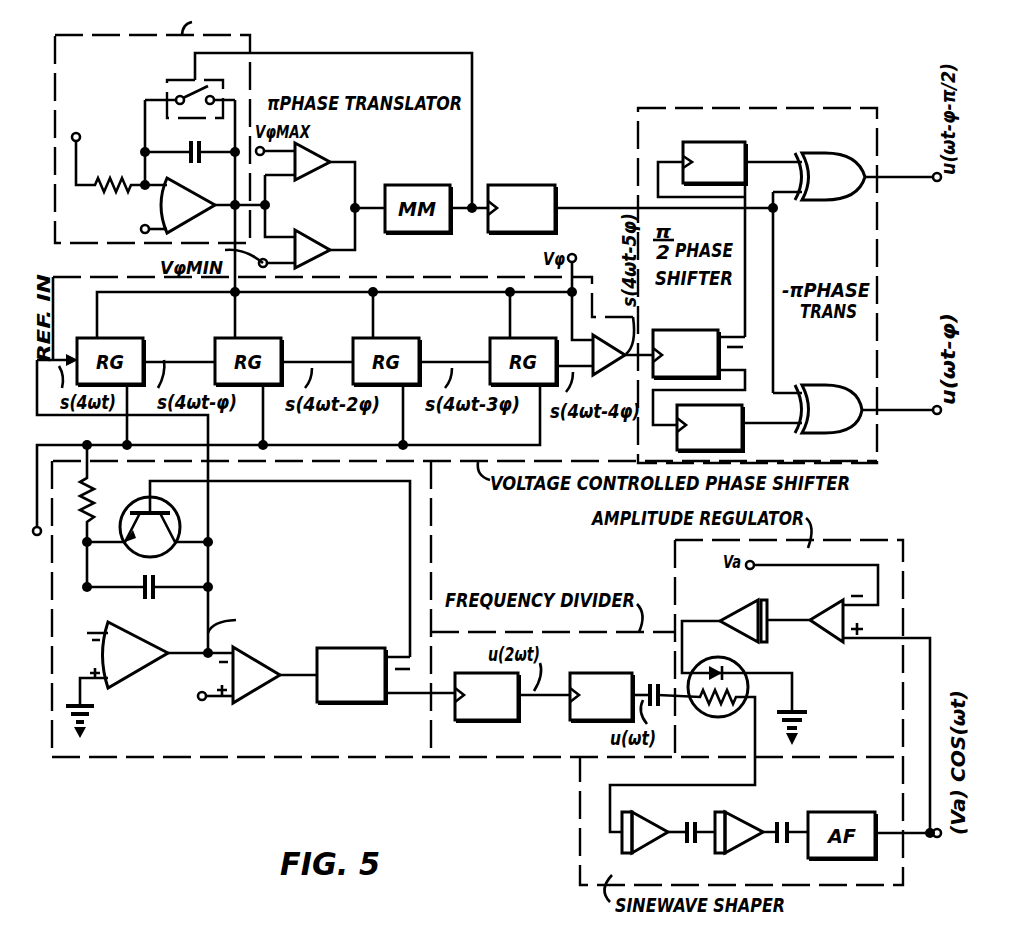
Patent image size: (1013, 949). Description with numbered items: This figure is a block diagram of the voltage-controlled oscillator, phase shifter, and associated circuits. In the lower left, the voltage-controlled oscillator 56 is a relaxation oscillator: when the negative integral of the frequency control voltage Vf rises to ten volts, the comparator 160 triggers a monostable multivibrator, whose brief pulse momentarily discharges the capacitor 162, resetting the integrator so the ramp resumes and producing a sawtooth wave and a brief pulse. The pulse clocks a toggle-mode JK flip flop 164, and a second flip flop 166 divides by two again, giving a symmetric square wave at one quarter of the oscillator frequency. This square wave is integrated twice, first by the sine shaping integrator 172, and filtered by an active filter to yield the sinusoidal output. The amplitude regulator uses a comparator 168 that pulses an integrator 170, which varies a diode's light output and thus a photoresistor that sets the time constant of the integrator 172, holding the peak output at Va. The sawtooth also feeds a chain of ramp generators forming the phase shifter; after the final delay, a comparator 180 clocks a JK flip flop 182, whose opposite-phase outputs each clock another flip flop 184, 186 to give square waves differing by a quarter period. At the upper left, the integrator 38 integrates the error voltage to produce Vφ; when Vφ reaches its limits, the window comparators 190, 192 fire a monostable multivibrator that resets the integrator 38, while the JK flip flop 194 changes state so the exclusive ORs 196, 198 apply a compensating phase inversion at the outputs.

The integrator 38 is at (106, 36).
The voltage-controlled oscillator 56 is at (240, 616).
The comparator 160 is at (264, 660).
The capacitor 162 is at (158, 596).
The JK flip flop 164 is at (457, 673).
The second flip flop 166 is at (586, 673).
The comparator 168 is at (834, 605).
The integrator 170 is at (730, 610).
The first sine shaping integrator 172 is at (650, 799).
The comparator 180 is at (609, 375).
The JK flip flop 182 is at (689, 330).
The JK flip flop 184 is at (742, 436).
The JK flip flop 186 is at (692, 142).
The window comparator 190 is at (327, 154).
The window comparator 192 is at (317, 233).
The JK flip flop 194 is at (524, 185).
The exclusive OR 196 is at (851, 156).
The exclusive OR 198 is at (823, 385).